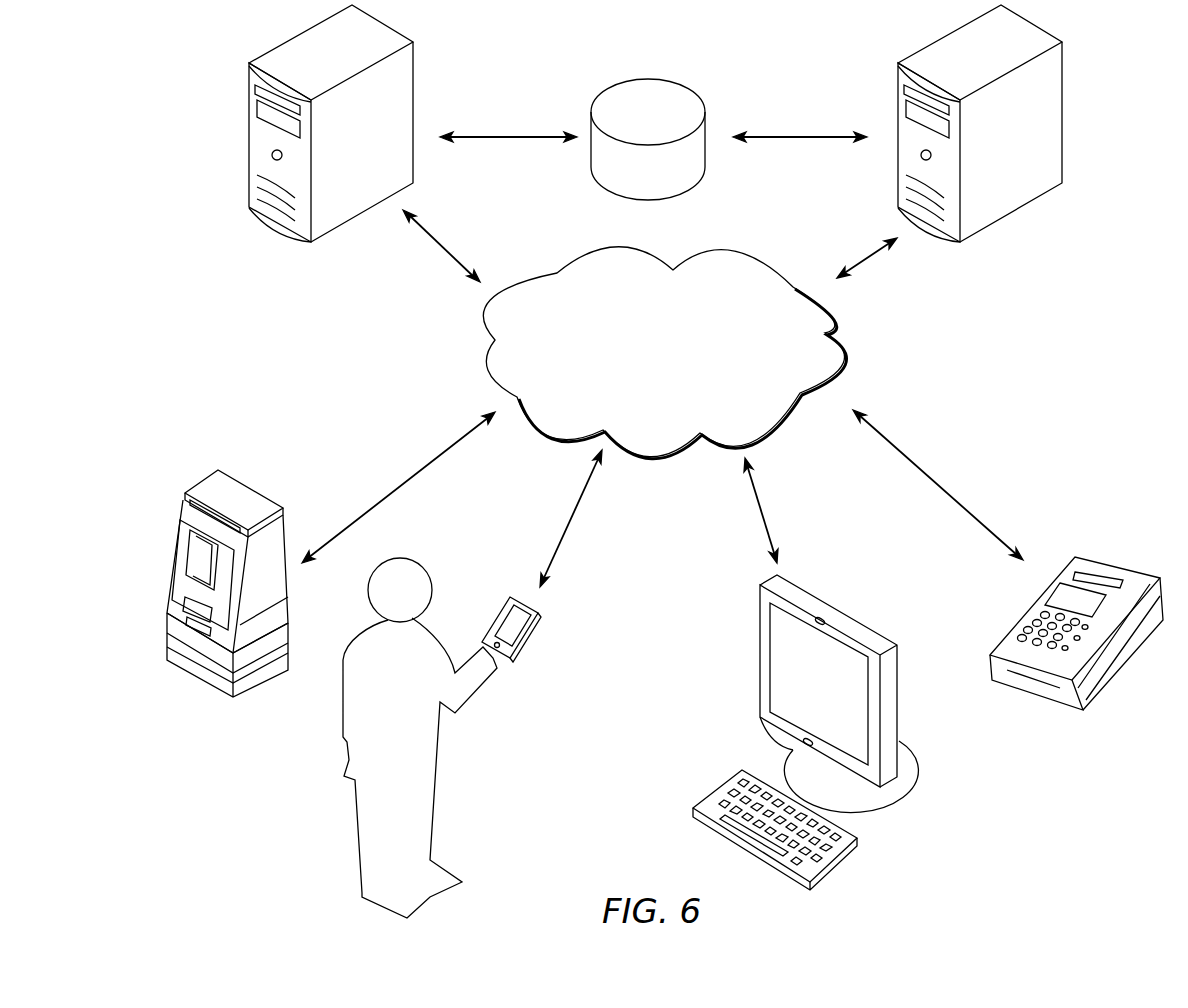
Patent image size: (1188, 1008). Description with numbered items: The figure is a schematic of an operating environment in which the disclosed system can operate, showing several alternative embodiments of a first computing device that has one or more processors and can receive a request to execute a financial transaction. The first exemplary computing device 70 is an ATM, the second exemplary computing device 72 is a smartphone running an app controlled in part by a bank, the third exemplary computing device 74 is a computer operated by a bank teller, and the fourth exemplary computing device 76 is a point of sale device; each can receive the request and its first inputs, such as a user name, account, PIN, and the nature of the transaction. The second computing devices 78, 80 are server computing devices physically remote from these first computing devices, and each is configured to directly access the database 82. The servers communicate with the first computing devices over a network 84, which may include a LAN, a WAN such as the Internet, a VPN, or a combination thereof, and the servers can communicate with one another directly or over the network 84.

The first exemplary computing device 70 is at (200, 697).
The second exemplary computing device 72 is at (500, 714).
The third exemplary computing device 74 is at (927, 820).
The fourth exemplary computing device 76 is at (1118, 545).
The second computing device 78 is at (210, 160).
The second computing device 80 is at (1099, 105).
The database 82 is at (636, 100).
The network 84 is at (483, 372).